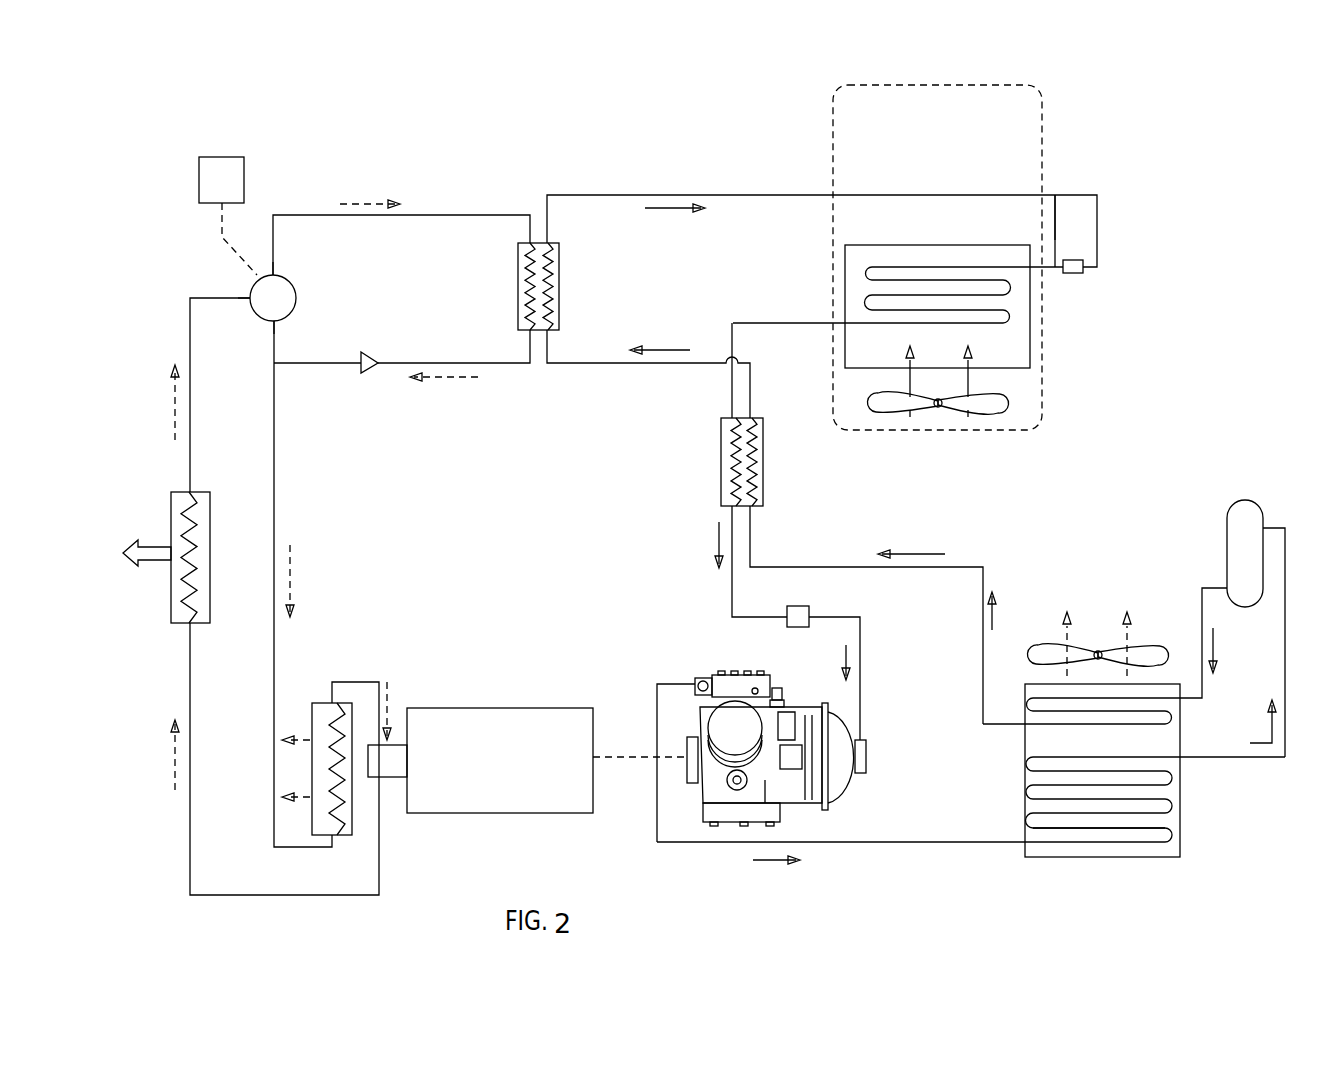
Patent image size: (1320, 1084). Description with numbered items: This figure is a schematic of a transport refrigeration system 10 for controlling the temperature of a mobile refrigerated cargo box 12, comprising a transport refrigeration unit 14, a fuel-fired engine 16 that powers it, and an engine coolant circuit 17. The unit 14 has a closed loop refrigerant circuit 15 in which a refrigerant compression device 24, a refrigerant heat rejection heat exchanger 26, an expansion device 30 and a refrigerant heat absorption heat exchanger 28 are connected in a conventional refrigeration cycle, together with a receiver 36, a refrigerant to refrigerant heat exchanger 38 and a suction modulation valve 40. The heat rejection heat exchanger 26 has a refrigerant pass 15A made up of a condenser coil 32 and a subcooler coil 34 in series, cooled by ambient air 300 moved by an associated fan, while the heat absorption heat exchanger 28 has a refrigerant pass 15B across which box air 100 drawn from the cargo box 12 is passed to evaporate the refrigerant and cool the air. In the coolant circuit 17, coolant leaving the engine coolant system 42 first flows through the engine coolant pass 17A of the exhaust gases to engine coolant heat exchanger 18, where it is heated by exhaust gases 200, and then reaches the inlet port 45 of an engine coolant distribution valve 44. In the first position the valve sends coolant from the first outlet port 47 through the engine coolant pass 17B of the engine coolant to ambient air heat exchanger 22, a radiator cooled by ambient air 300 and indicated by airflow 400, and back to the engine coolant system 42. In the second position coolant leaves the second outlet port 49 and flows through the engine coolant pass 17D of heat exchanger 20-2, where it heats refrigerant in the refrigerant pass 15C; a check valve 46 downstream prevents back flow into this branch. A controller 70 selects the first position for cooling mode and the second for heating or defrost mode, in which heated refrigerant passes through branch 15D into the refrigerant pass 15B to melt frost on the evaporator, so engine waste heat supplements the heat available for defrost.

The transport refrigeration system 10 is at (302, 142).
The mobile refrigerated cargo box 12 is at (1040, 135).
The transport refrigeration unit 14 is at (1147, 483).
The refrigerant circuit 15 is at (780, 196).
The refrigerant pass 15A is at (1095, 828).
The refrigerant pass 15B is at (930, 265).
The refrigerant pass 15C is at (559, 302).
The branch 15D is at (1058, 215).
The fuel-fired engine 16 is at (515, 708).
The engine coolant circuit 17 is at (188, 347).
The engine coolant pass 17A is at (200, 560).
The engine coolant pass 17B is at (312, 760).
The engine coolant pass 17D is at (518, 265).
The engine exhaust gases to engine coolant heat exchanger 18 is at (200, 492).
The heat exchanger 20-2 is at (559, 262).
The engine coolant to ambient air heat exchanger 22 is at (312, 725).
The refrigerant compression device 24 is at (818, 810).
The refrigerant heat rejection heat exchanger 26 is at (1180, 775).
The refrigerant heat absorption heat exchanger 28 is at (1030, 318).
The expansion device 30 is at (1068, 258).
The condenser coil 32 is at (1167, 835).
The subcooler coil 34 is at (1167, 722).
The receiver 36 is at (1245, 500).
The refrigerant to refrigerant heat exchanger 38 is at (721, 483).
The suction modulation valve 40 is at (797, 606).
The engine coolant system 42 is at (388, 778).
The engine coolant distribution valve 44 is at (296, 295).
The inlet port 45 is at (250, 298).
The check valve 46 is at (365, 352).
The first outlet port 47 is at (274, 322).
The second outlet port 49 is at (278, 276).
The controller 70 is at (247, 190).
The air 100 is at (968, 420).
The exhaust gases 200 is at (150, 563).
The ambient air 300 is at (1072, 633).
The airflow 400 is at (300, 800).